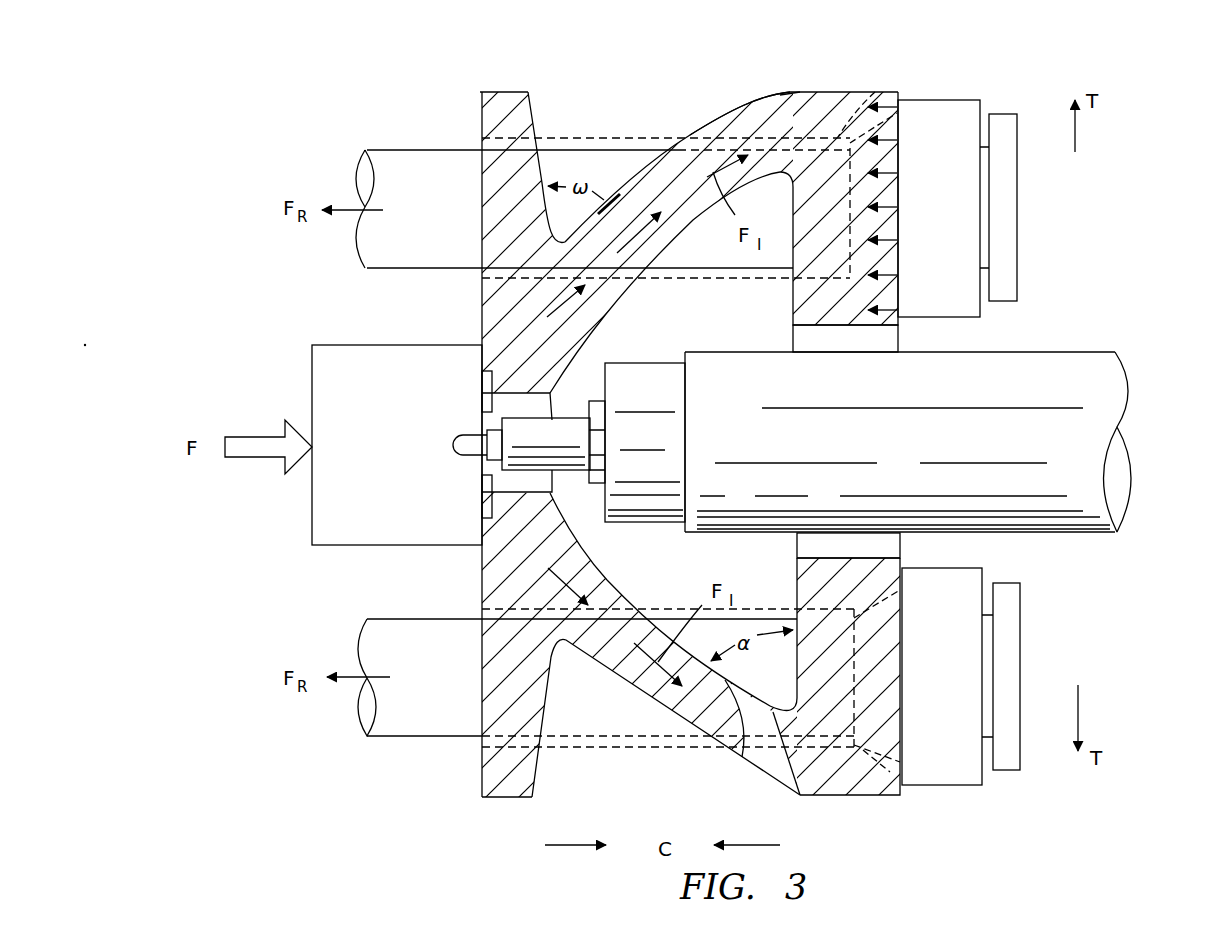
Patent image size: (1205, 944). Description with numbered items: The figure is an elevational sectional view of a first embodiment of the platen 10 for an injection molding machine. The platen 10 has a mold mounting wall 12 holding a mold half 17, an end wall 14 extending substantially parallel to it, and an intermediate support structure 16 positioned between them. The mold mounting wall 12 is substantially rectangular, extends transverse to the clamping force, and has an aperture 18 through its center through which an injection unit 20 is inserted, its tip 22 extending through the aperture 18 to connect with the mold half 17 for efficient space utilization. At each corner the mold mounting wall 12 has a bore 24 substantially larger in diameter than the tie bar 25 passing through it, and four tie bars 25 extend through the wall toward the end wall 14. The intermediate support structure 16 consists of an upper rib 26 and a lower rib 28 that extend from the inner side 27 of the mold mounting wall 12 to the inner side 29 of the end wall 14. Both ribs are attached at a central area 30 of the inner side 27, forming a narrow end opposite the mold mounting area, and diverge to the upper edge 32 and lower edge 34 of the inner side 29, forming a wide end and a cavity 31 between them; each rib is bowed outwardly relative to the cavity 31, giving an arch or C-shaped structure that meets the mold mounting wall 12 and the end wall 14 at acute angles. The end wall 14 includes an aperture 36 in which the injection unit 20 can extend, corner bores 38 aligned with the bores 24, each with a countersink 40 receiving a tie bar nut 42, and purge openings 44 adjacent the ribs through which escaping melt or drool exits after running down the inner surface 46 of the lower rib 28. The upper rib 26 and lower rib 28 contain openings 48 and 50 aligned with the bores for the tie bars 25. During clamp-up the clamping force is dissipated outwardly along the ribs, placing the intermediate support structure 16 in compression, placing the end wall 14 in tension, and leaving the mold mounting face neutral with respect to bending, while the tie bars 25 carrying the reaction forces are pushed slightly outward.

The platen 10 is at (614, 86).
The mold mounting wall 12 is at (481, 309).
The end wall 14 is at (900, 324).
The intermediate support structure 16 is at (640, 180).
The mold half 17 is at (338, 548).
The aperture 18 is at (488, 420).
The injection unit 20 is at (1068, 533).
The tip 22 is at (582, 514).
The bore 24 is at (511, 133).
The tie bars 25 is at (408, 148).
The upper rib 26 is at (790, 93).
The inner side 27 is at (533, 119).
The lower rib 28 is at (672, 720).
The inner side 29 is at (797, 657).
The central area 30 is at (577, 350).
The cavity 31 is at (700, 560).
The upper edge 32 is at (784, 92).
The lower edge 34 is at (855, 797).
The aperture 36 is at (797, 545).
The bores 38 is at (875, 92).
The countersink 40 is at (940, 442).
The tie bar nuts 42 is at (966, 113).
The purge openings 44 is at (772, 778).
The inner surface 46 is at (615, 588).
The opening 48 is at (729, 137).
The opening 50 is at (727, 753).